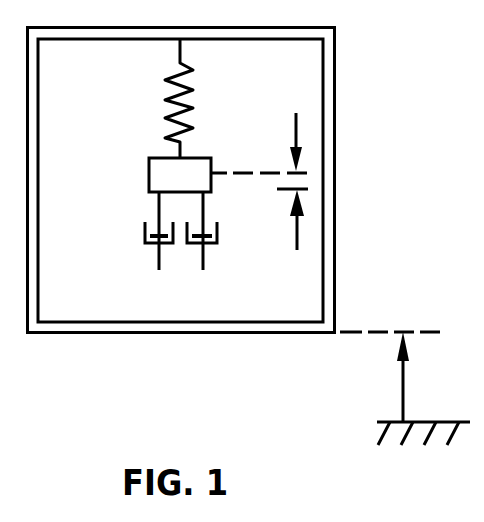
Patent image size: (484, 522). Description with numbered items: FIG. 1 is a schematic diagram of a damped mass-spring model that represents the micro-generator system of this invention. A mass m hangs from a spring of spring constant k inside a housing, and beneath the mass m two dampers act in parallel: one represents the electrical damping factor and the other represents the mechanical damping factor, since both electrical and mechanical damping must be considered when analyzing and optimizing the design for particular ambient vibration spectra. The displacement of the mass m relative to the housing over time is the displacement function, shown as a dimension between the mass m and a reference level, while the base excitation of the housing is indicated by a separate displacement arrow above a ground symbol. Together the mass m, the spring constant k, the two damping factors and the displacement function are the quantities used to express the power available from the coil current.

The spring constant k is at (165, 98).
The mass m is at (180, 175).